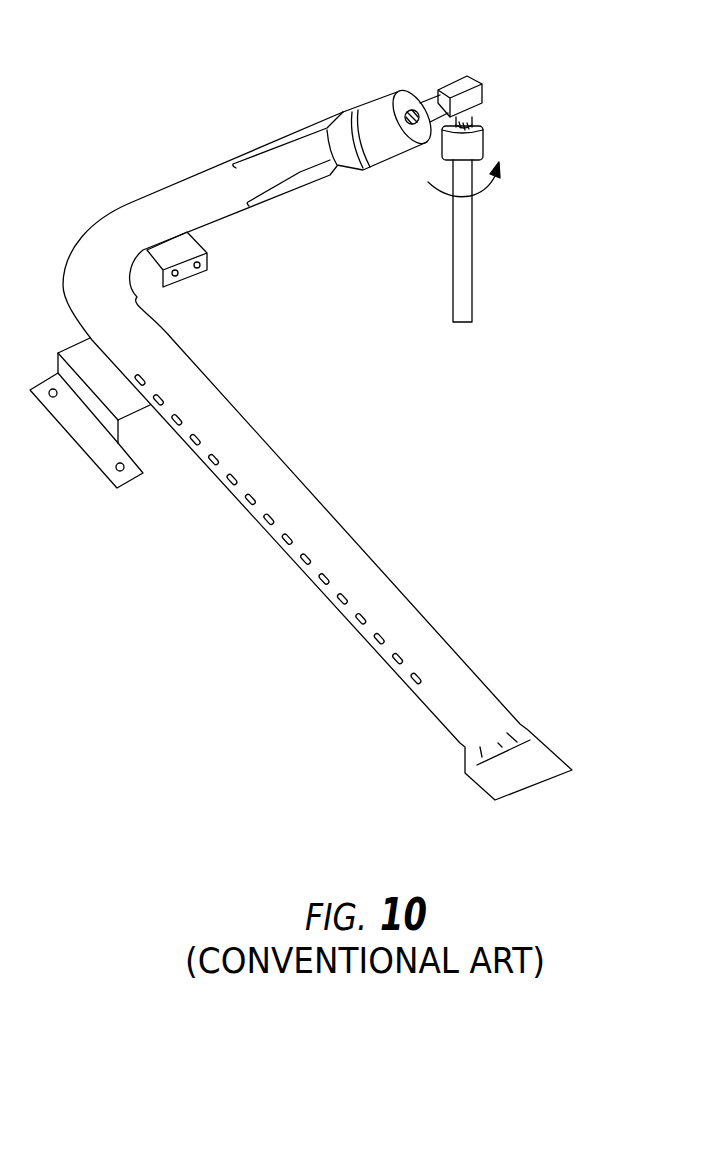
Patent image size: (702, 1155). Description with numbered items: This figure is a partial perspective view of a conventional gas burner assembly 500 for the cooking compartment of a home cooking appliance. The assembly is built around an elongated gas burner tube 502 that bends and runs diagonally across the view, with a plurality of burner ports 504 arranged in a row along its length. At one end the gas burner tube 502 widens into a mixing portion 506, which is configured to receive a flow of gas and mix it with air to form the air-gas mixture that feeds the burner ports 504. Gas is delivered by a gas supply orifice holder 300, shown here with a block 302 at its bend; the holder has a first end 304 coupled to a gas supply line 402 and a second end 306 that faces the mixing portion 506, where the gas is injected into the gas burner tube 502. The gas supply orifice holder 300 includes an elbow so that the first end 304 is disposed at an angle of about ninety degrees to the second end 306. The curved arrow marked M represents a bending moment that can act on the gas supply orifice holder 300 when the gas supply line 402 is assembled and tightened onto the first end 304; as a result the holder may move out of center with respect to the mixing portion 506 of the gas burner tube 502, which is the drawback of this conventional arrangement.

The gas supply orifice holder 300 is at (491, 173).
The connector block 302 is at (480, 83).
The first end 304 is at (477, 108).
The second end 306 is at (432, 90).
The gas supply line 402 is at (487, 140).
The gas burner assembly 500 is at (307, 422).
The gas burner tube 502 is at (257, 513).
The burner ports 504 is at (353, 615).
The mixing portion 506 is at (363, 98).
The bending moment M is at (432, 183).